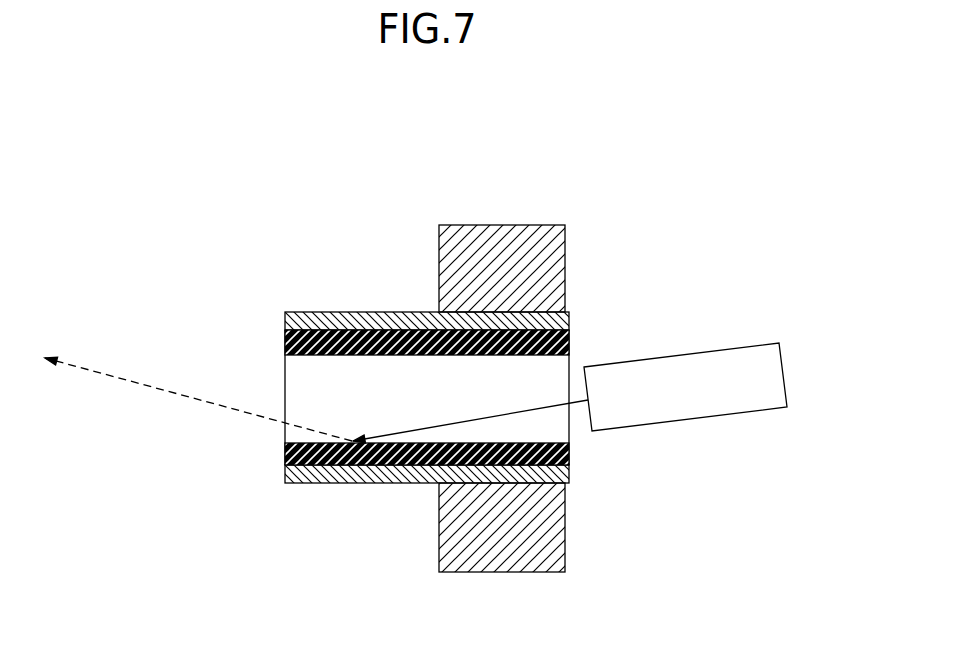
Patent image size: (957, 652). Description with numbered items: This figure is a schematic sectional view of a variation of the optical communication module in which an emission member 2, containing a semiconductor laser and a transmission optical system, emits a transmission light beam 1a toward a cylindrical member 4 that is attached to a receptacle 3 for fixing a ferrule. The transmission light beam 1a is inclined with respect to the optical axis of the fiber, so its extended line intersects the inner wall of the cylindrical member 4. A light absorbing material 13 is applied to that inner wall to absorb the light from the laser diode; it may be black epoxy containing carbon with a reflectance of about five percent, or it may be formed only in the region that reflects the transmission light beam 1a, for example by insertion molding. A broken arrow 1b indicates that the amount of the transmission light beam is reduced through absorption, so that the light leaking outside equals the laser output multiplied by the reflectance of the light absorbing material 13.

The emission member 2 is at (736, 366).
The receptacle 3 is at (555, 250).
The cylindrical member 4 is at (283, 473).
The light absorbing material 13 is at (445, 357).
The transmission light beam 1a is at (550, 407).
The broken arrow 1b is at (155, 390).